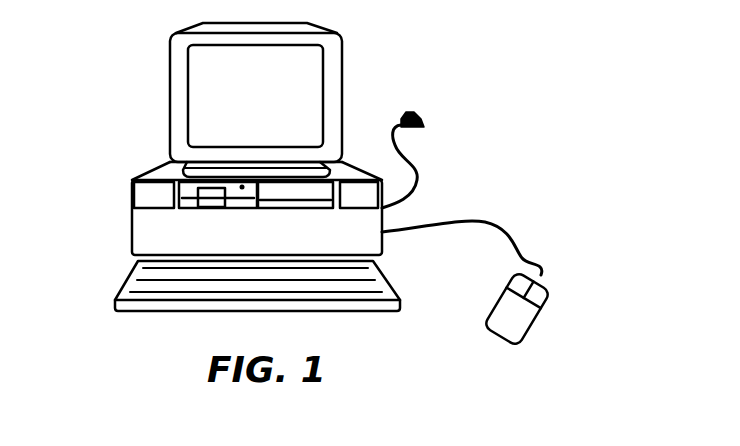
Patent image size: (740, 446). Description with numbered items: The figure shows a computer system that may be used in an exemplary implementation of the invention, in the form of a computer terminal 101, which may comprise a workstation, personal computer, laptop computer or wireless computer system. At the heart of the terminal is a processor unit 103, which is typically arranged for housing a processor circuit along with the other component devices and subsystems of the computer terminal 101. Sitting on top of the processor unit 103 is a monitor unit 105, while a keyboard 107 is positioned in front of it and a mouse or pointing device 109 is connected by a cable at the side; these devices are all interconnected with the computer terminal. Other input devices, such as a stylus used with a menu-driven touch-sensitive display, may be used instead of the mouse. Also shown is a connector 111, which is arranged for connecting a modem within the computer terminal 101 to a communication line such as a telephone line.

The computer terminal 101 is at (505, 172).
The processor unit 103 is at (143, 219).
The monitor unit 105 is at (168, 107).
The keyboard 107 is at (127, 278).
The mouse or pointing device 109 is at (548, 308).
The connector 111 is at (412, 112).